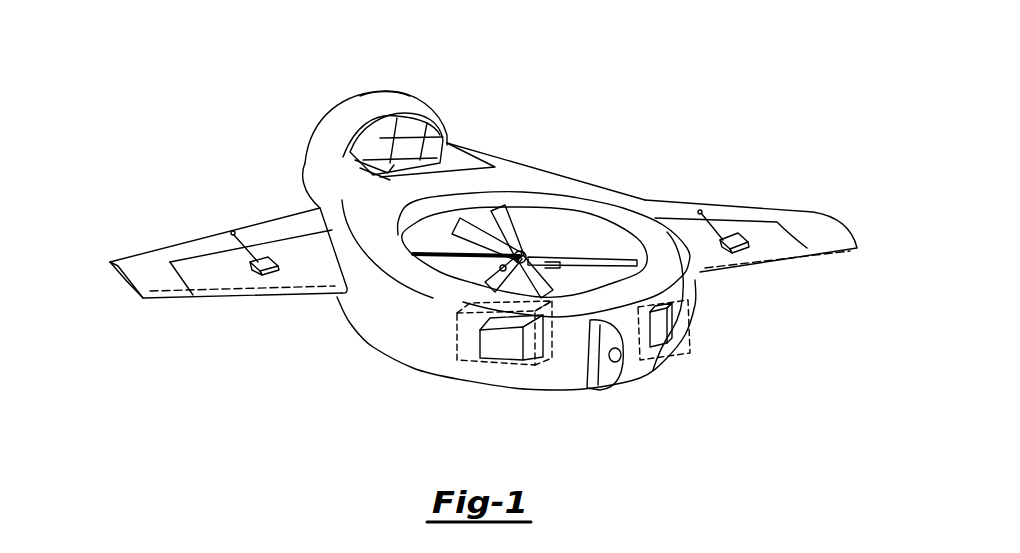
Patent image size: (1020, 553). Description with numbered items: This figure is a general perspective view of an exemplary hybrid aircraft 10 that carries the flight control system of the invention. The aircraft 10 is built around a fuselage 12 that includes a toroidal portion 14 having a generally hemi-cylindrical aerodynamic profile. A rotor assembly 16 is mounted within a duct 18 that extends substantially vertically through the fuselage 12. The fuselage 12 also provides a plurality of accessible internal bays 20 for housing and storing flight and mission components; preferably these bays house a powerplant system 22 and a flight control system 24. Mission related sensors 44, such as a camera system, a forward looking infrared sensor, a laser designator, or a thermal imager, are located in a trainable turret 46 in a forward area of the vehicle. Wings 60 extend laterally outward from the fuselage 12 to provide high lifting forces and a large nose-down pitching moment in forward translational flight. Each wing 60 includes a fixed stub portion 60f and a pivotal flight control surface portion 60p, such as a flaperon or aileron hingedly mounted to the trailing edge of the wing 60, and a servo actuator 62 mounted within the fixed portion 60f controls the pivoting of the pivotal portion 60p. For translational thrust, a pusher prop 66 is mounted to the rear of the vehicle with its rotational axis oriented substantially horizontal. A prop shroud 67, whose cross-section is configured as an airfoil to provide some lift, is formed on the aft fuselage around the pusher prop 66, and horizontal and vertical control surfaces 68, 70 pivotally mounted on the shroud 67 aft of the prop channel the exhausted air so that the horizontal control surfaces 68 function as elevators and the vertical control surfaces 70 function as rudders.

The aircraft 10 is at (684, 73).
The fuselage 12 is at (539, 170).
The toroidal portion 14 is at (655, 366).
The rotor assembly 16 is at (531, 233).
The duct 18 is at (585, 232).
The accessible internal bays 20 is at (443, 341).
The powerplant system 22 is at (690, 323).
The flight control system 24 is at (502, 361).
The mission related sensors 44 is at (610, 377).
The trainable turret 46 is at (580, 370).
The wings 60 is at (133, 218).
The pivotal flight control surface portion 60p is at (207, 240).
The fixed stub portion 60f is at (223, 280).
The servo actuator 62 is at (262, 257).
The pusher prop 66 is at (352, 130).
The prop shroud 67 is at (407, 100).
The horizontal control surfaces 68 is at (467, 160).
The vertical control surfaces 70 is at (310, 165).